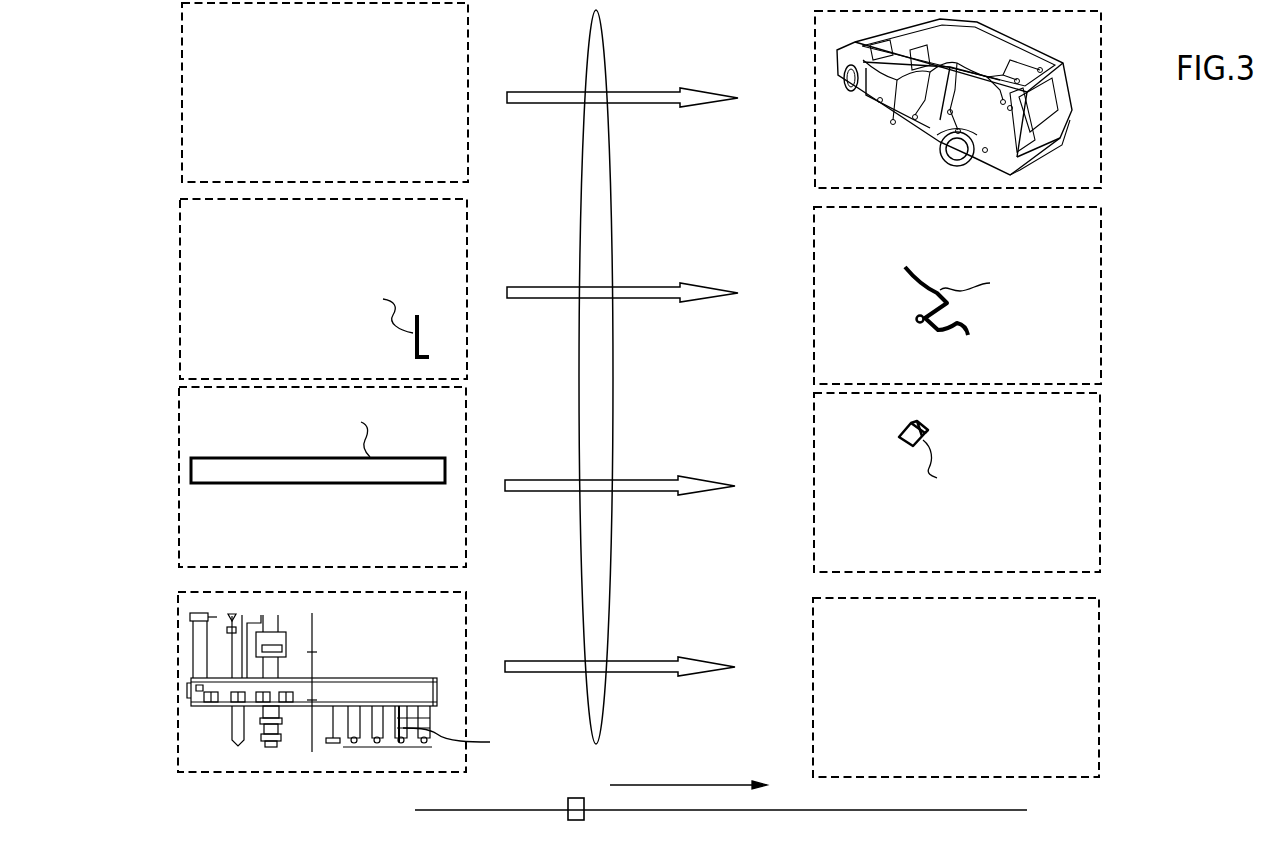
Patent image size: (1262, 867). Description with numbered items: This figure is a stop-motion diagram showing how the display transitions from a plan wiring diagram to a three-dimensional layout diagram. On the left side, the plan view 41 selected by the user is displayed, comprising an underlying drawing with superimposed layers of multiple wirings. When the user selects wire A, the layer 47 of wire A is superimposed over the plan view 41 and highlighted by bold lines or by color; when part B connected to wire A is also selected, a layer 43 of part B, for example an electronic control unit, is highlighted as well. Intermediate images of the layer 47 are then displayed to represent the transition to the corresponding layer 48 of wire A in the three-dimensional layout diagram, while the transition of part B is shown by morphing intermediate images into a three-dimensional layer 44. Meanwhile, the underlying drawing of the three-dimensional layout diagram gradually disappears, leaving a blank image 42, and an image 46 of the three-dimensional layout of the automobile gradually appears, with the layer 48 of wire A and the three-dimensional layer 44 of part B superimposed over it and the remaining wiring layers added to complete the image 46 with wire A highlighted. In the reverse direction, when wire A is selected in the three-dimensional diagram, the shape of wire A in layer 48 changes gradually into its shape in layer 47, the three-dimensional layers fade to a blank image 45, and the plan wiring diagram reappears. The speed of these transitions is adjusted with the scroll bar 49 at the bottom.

The plan view 41 is at (466, 638).
The blank image 42 is at (1099, 643).
The layer of part B 43 is at (466, 432).
The three-dimensional layer of part B 44 is at (1100, 433).
The blank image 45 is at (468, 61).
The image of the three-dimensional layout diagram 46 is at (1101, 68).
The layer of wire A 47 is at (467, 230).
The layer of wire A 48 is at (1101, 232).
The scroll bar 49 is at (1043, 813).